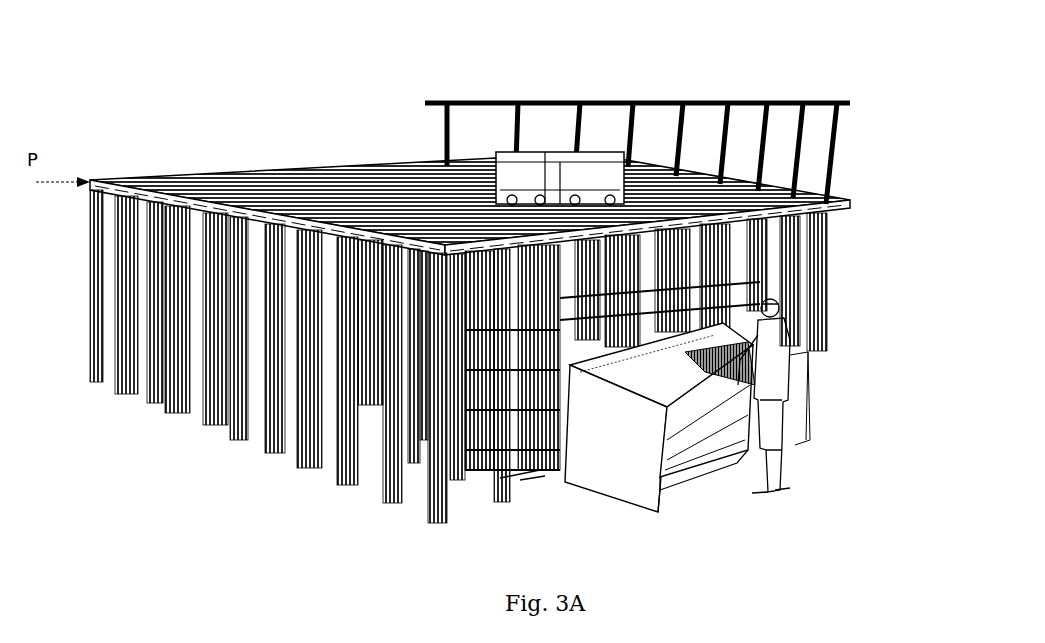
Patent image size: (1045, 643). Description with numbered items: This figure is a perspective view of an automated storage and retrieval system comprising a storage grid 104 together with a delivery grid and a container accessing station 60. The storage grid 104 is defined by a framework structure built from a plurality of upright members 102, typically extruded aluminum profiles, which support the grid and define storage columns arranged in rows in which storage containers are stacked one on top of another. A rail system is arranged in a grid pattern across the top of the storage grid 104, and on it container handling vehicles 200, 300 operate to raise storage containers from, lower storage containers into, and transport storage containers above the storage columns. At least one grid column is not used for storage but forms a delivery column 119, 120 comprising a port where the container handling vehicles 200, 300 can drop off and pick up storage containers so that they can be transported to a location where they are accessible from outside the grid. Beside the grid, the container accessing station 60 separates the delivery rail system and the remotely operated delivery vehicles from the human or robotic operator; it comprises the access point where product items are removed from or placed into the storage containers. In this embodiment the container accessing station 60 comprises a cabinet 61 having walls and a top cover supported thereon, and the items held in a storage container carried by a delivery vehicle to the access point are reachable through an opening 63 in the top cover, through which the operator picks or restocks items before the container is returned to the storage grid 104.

The storage grid 104 is at (166, 172).
The upright members 102 is at (303, 405).
The delivery column 119 is at (476, 157).
The delivery column 120 is at (574, 118).
The container handling vehicle 200 is at (558, 160).
The container handling vehicle 300 is at (587, 126).
The container accessing station 60 is at (645, 453).
The cabinet 61 is at (668, 462).
The opening 63 is at (710, 373).